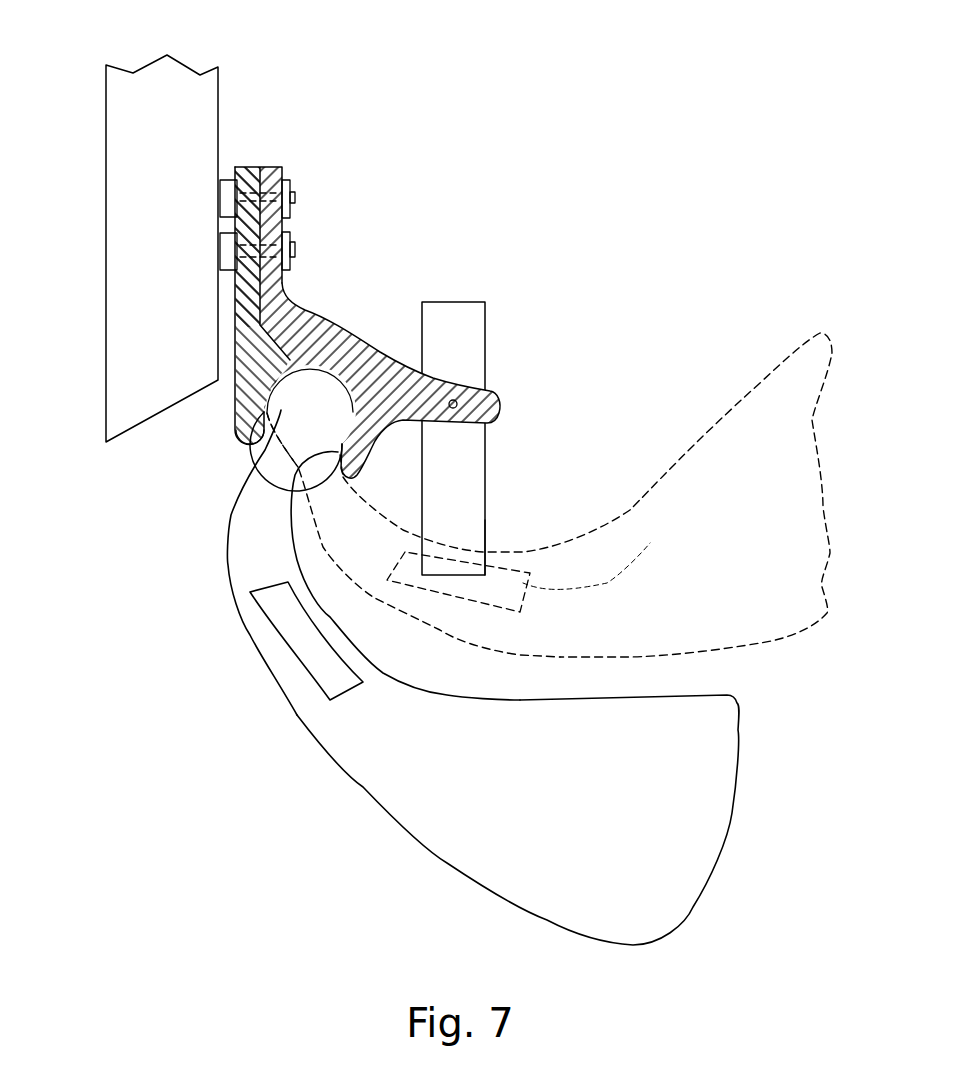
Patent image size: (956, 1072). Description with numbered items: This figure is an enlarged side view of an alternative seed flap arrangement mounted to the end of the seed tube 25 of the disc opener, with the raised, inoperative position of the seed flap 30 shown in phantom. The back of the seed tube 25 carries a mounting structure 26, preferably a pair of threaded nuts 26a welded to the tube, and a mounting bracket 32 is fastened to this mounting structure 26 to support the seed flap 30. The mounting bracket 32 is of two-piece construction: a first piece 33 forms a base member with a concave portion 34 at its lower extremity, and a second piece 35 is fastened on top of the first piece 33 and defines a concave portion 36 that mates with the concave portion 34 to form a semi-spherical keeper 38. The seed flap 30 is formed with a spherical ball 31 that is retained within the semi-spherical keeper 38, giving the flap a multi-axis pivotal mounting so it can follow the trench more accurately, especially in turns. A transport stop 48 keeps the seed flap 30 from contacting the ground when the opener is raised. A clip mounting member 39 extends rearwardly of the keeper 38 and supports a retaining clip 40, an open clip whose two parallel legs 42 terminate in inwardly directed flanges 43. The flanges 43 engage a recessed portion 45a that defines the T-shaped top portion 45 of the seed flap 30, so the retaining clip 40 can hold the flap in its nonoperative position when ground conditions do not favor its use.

The seed tube 25 is at (187, 65).
The mounting structure 26 is at (228, 180).
The threaded nuts 26a is at (290, 240).
The seed flap 30 is at (410, 825).
The spherical ball 31 is at (397, 350).
The mounting bracket 32 is at (240, 404).
The first piece 33 is at (250, 167).
The concave portion 34 is at (264, 440).
The second piece 35 is at (287, 300).
The concave portion 36 is at (330, 398).
The semi-spherical keeper 38 is at (320, 456).
The clip mounting member 39 is at (500, 394).
The retaining clip 40 is at (485, 318).
The legs 42 is at (484, 535).
The flanges 43 is at (453, 577).
The top portion 45 is at (215, 812).
The recessed portion 45a is at (280, 635).
The transport stop 48 is at (237, 447).